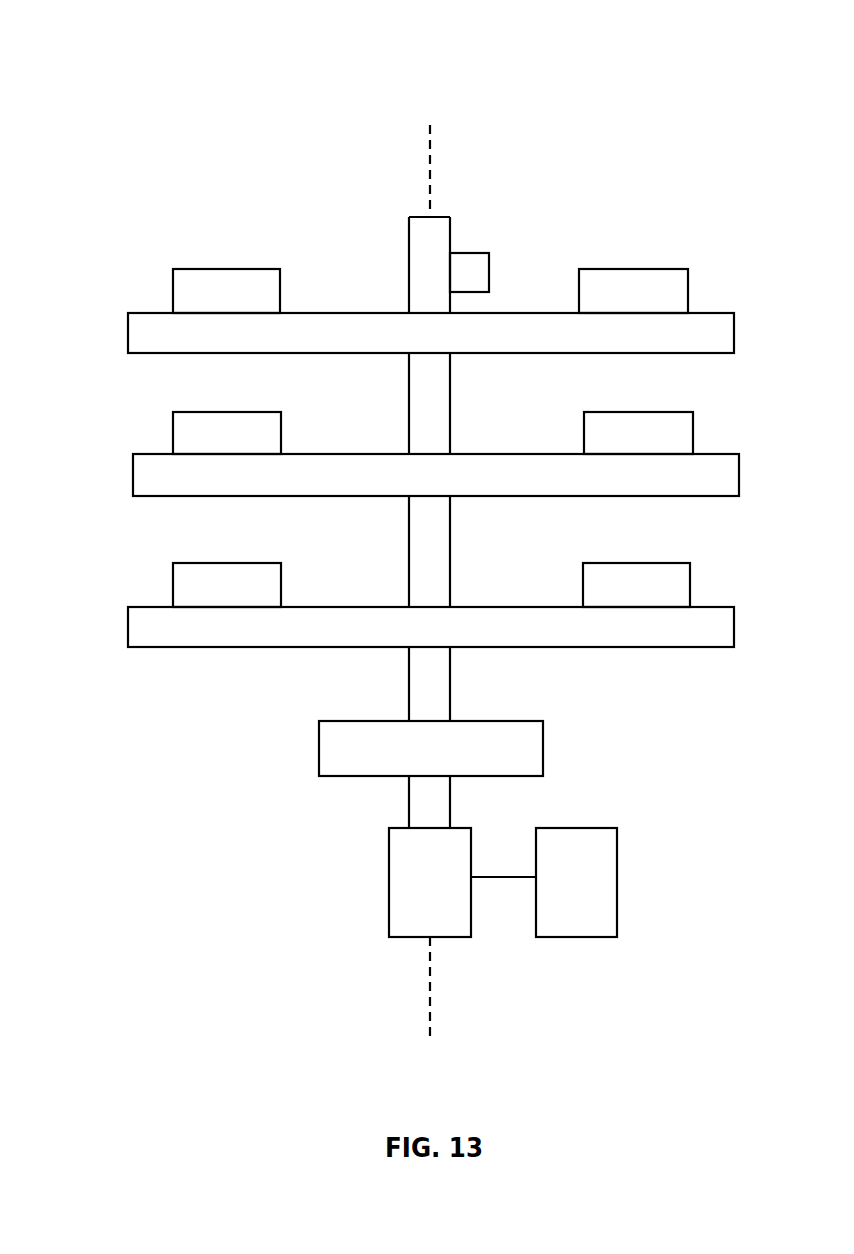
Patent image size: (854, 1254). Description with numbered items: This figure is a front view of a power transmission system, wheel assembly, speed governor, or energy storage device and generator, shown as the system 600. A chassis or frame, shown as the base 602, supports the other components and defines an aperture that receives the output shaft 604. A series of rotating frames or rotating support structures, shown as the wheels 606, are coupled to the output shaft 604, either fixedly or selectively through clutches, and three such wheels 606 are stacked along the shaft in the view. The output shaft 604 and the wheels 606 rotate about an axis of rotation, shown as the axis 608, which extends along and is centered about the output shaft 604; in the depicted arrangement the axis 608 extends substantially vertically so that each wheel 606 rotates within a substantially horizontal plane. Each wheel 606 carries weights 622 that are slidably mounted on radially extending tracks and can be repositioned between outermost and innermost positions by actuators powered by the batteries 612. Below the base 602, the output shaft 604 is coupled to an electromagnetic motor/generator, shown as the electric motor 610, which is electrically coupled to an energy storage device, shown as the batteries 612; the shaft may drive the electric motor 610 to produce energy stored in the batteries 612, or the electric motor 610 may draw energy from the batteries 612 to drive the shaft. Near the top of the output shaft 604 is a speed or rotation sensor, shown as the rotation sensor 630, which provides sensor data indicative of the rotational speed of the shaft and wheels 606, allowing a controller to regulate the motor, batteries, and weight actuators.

The system 600 is at (668, 48).
The base 602 is at (319, 748).
The output shaft 604 is at (452, 700).
The wheels 606 is at (128, 336).
The axis 608 is at (433, 177).
The electric motor 610 is at (389, 882).
The batteries 612 is at (617, 880).
The weight 622 is at (228, 268).
The rotation sensor 630 is at (482, 253).